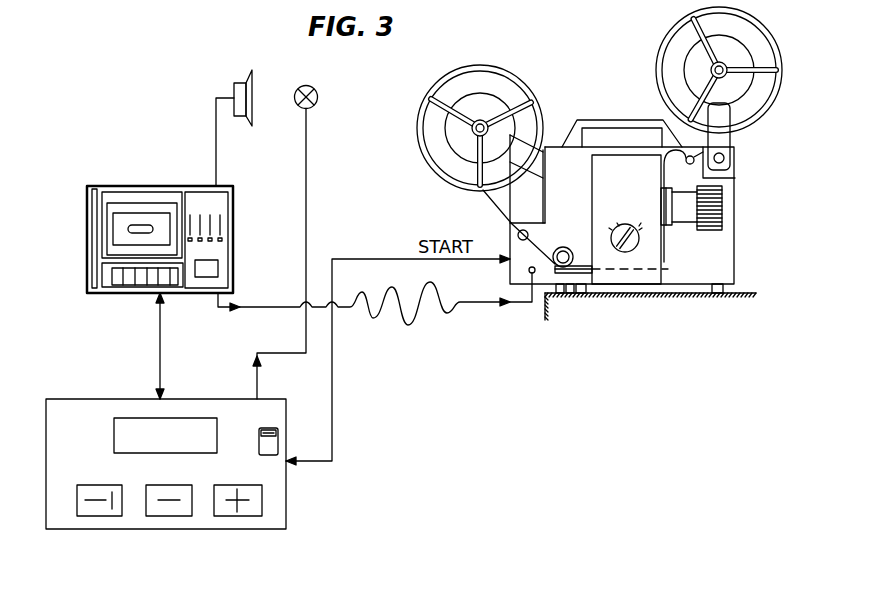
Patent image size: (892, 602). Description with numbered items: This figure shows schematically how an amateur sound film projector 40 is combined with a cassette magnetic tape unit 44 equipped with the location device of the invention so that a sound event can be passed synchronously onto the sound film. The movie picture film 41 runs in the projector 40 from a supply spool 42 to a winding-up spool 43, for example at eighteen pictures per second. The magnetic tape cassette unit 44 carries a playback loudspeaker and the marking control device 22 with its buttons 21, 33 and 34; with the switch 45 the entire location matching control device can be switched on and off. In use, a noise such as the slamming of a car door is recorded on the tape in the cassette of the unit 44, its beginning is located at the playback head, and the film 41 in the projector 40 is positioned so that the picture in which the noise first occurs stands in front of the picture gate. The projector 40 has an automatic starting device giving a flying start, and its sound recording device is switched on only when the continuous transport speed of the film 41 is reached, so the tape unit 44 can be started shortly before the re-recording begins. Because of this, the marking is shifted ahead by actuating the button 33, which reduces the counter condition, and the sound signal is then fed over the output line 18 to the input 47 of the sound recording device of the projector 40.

The output line 18 is at (215, 296).
The button 21 is at (173, 420).
The marking control device 22 is at (80, 436).
The button 33 is at (167, 516).
The button 34 is at (230, 516).
The sound film projector 40 is at (628, 211).
The movie picture film 41 is at (666, 259).
The supply spool 42 is at (692, 58).
The winding-up spool 43 is at (483, 100).
The magnetic tape cassette unit 44 is at (87, 222).
The switch 45 is at (275, 448).
The input 47 is at (528, 292).